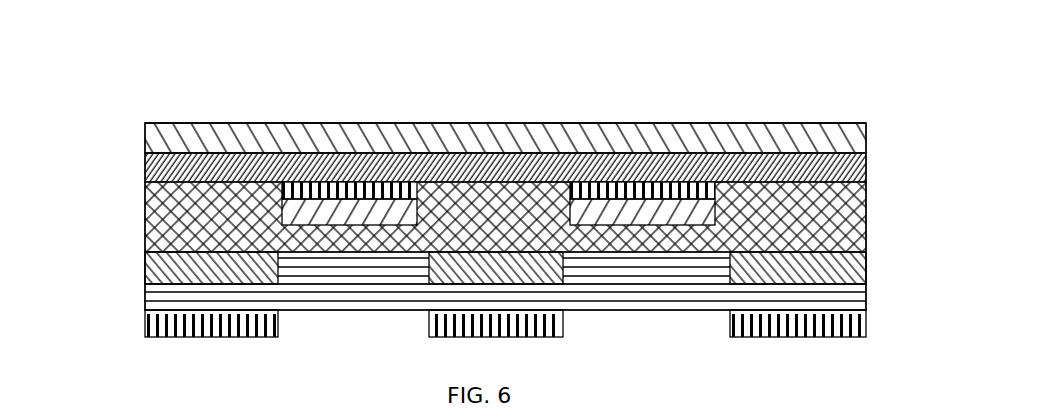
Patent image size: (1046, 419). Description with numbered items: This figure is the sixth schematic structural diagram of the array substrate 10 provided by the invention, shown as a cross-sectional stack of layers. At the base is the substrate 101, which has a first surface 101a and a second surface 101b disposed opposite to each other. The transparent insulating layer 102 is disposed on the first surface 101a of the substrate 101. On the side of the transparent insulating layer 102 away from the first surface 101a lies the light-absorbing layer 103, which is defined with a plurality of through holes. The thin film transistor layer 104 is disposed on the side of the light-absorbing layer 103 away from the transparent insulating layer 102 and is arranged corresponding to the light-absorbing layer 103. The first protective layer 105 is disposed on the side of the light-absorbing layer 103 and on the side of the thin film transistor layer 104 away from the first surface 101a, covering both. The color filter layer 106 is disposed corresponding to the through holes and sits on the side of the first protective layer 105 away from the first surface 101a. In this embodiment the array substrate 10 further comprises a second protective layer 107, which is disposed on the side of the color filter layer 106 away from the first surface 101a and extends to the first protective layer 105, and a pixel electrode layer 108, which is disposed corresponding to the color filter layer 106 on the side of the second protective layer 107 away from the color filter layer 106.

The array substrate 10 is at (176, 88).
The substrate 101 is at (867, 133).
The first surface 101a is at (144, 154).
The second surface 101b is at (144, 128).
The transparent insulating layer 102 is at (867, 162).
The light-absorbing layer 103 is at (325, 181).
The thin film transistor layer 104 is at (628, 212).
The first protective layer 105 is at (867, 215).
The color filter layer 106 is at (867, 269).
The second protective layer 107 is at (867, 295).
The pixel electrode layer 108 is at (867, 325).